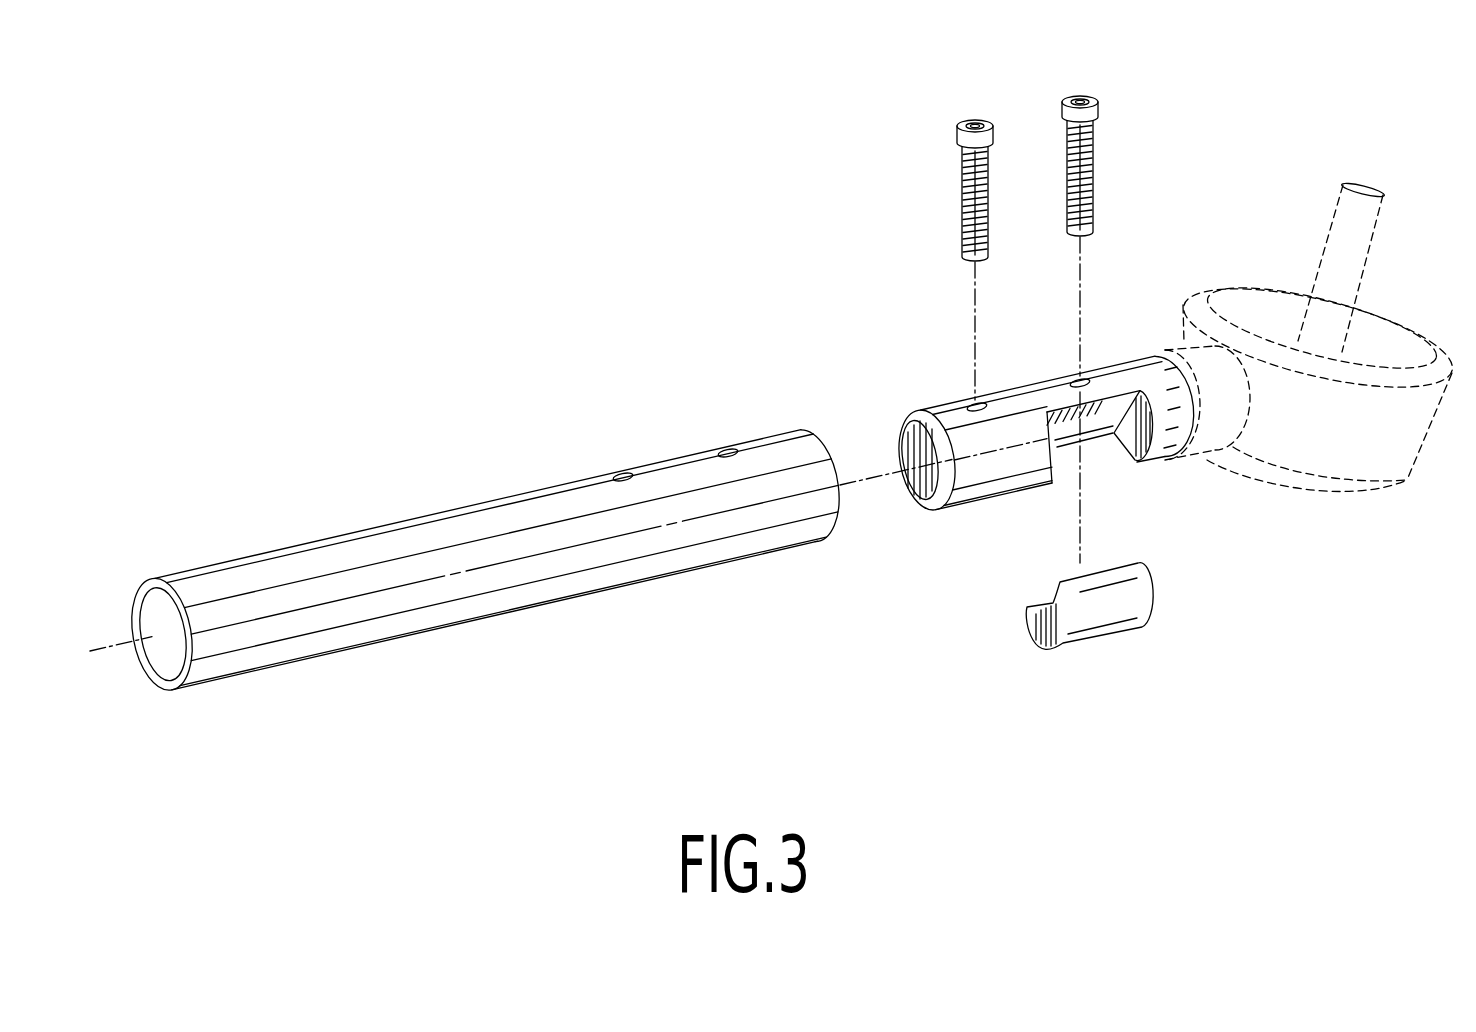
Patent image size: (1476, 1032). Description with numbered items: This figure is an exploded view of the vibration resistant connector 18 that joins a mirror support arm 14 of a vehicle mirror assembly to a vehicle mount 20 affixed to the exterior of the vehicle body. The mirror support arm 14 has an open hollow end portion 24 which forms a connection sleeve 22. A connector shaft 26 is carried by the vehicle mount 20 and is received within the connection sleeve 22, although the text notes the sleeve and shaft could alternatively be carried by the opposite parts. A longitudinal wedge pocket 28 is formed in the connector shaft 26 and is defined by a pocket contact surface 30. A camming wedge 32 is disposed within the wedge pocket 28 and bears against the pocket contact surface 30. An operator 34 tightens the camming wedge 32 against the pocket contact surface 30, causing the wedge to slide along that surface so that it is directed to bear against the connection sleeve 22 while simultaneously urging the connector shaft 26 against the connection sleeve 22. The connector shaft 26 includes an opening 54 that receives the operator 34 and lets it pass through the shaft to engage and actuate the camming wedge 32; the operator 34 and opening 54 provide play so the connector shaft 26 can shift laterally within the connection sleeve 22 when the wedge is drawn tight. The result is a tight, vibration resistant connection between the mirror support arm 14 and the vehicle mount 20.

The mirror support arm 14 is at (205, 574).
The vibration resistant connector 18 is at (950, 585).
The vehicle mount 20 is at (1355, 457).
The connection sleeve 22 is at (832, 523).
The open hollow end portion 24 is at (826, 440).
The connector shaft 26 is at (949, 410).
The longitudinal wedge pocket 28 is at (1105, 448).
The pocket contact surface 30 is at (1098, 430).
The camming wedge 32 is at (1117, 625).
The operator 34 is at (1100, 110).
The opening 54 is at (1078, 382).